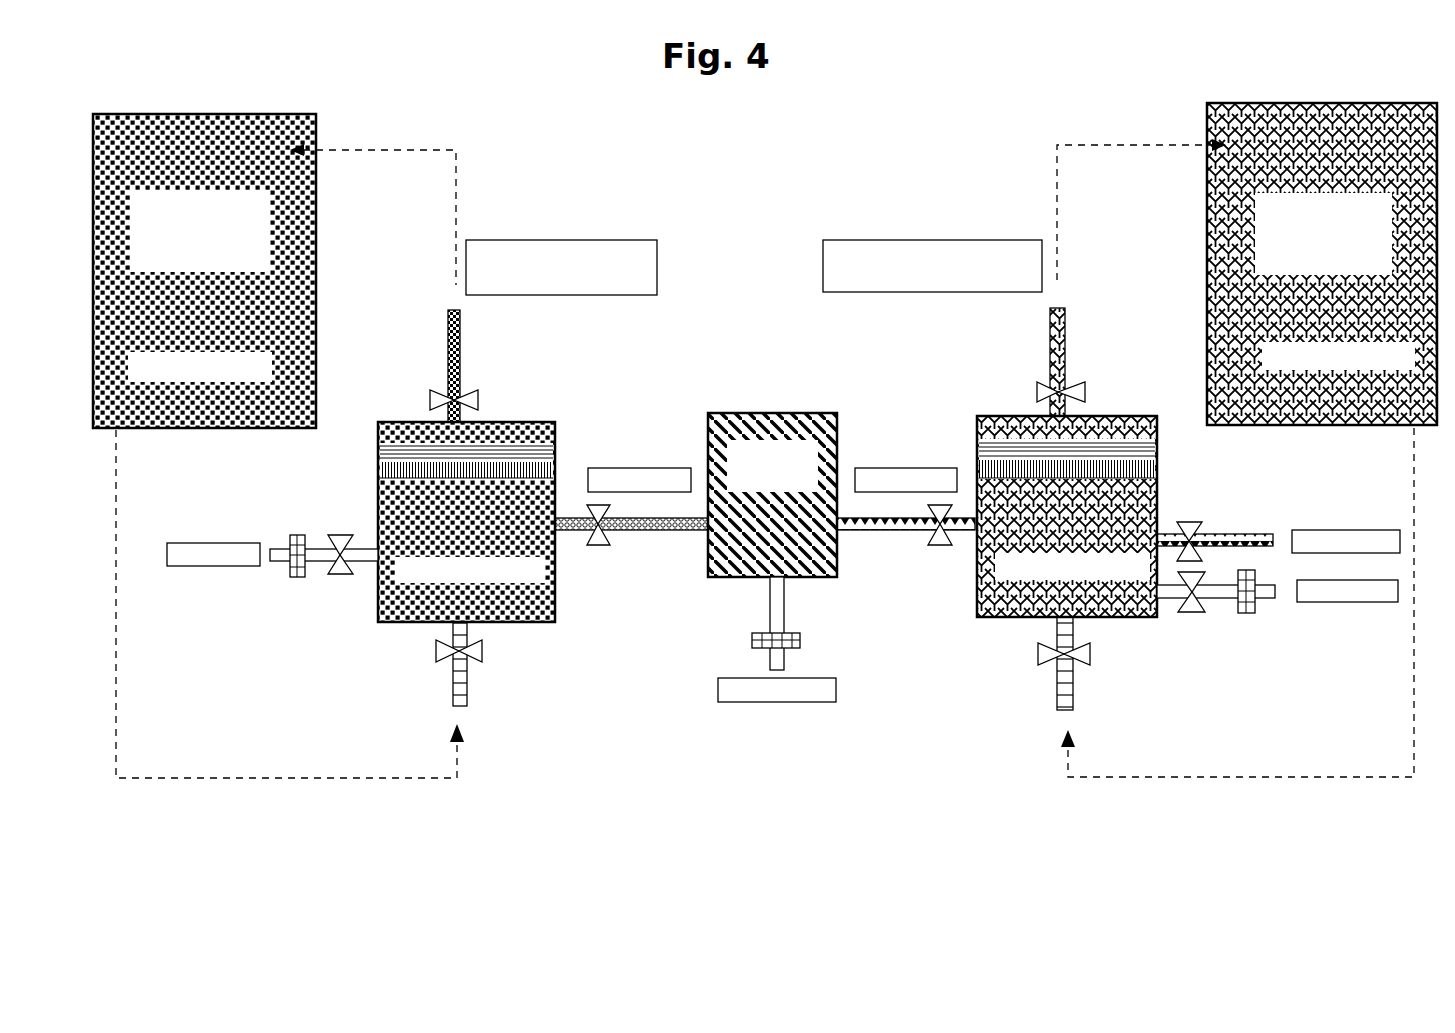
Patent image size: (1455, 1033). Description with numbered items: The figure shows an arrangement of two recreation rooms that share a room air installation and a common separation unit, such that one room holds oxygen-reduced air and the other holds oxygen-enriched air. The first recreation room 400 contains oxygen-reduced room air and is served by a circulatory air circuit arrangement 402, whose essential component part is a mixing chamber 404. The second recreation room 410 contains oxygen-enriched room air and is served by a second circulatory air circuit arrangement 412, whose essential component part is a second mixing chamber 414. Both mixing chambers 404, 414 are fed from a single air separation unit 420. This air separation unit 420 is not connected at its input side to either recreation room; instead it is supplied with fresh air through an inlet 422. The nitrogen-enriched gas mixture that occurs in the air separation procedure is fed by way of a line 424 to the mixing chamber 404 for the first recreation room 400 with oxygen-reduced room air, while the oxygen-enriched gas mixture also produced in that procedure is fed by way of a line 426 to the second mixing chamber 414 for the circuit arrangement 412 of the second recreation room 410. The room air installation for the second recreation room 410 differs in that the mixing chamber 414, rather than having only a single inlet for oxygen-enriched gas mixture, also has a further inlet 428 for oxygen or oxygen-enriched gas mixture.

The first recreation room 400 is at (318, 126).
The circulatory air circuit arrangement 402 is at (456, 173).
The mixing chamber 404 is at (517, 421).
The second recreation room 410 is at (1205, 125).
The second circulatory air circuit arrangement 412 is at (1057, 173).
The second mixing chamber 414 is at (1008, 416).
The air separation unit 420 is at (793, 413).
The inlet 422 is at (796, 660).
The line 424 is at (660, 533).
The line 426 is at (887, 533).
The further inlet 428 is at (1290, 531).